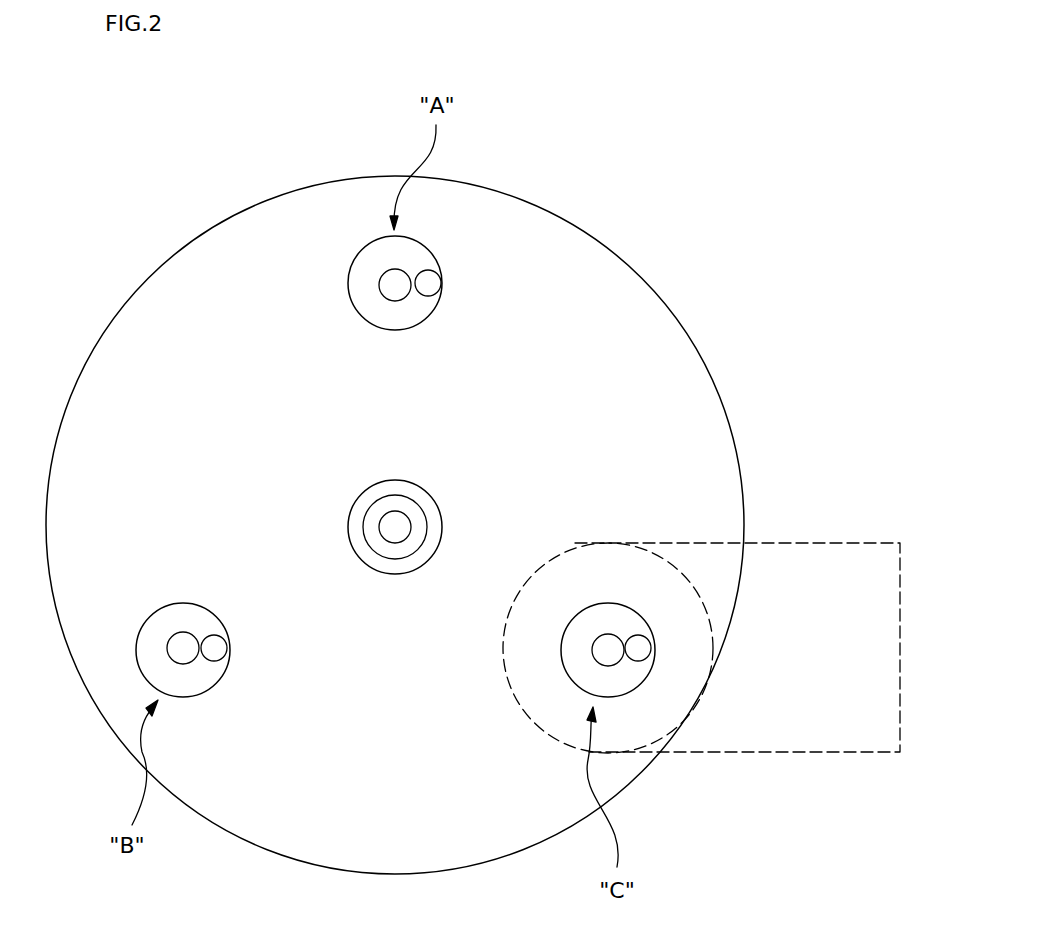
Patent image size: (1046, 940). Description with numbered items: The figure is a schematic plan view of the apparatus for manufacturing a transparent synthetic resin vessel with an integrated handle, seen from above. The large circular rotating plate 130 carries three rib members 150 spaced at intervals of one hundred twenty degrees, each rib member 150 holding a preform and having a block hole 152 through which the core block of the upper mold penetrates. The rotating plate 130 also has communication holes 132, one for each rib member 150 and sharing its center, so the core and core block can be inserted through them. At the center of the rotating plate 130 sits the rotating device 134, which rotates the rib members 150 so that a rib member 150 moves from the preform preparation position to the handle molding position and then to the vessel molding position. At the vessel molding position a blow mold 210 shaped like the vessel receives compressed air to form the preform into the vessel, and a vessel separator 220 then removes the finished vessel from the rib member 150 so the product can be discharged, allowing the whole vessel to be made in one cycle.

The rotating plate 130 is at (722, 436).
The communication holes 132 is at (440, 285).
The rotating device 134 is at (403, 490).
The rib member 150 is at (430, 255).
The block hole 152 is at (392, 284).
The blow mold 210 is at (710, 606).
The vessel separator 220 is at (822, 756).